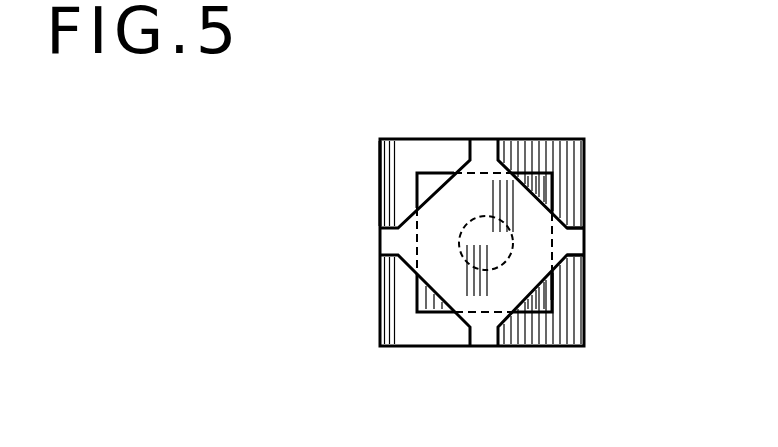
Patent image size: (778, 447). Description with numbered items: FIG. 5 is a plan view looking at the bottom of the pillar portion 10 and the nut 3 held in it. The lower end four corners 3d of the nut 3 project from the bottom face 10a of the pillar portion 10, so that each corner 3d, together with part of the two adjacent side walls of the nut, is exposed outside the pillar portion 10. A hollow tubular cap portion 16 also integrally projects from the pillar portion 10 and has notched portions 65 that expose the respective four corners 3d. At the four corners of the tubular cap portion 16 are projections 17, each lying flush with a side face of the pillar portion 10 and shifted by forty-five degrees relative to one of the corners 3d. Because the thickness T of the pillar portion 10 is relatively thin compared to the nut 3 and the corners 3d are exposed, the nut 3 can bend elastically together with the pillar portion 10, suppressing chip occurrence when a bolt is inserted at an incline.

The nut 3 is at (558, 315).
The lower end four corners of nut 3d is at (553, 180).
The pillar portion 10 is at (379, 325).
The bottom face of pillar portion 10a is at (398, 288).
The hollow tubular cap portion 16 is at (533, 225).
The projections 17 is at (585, 242).
The notched portions 65 is at (557, 272).
The thickness of pillar portion T is at (462, 182).